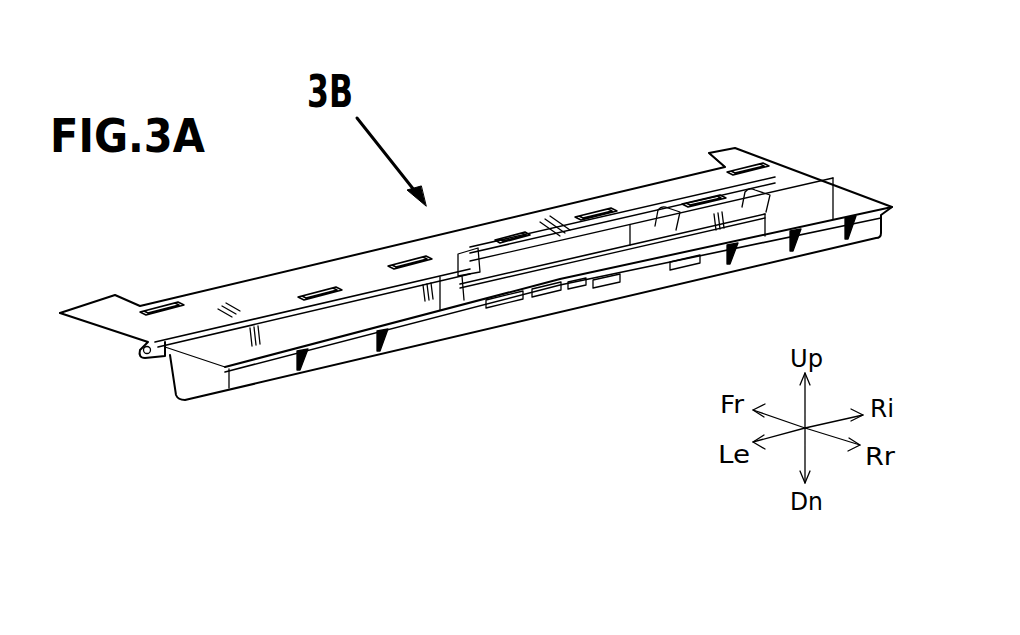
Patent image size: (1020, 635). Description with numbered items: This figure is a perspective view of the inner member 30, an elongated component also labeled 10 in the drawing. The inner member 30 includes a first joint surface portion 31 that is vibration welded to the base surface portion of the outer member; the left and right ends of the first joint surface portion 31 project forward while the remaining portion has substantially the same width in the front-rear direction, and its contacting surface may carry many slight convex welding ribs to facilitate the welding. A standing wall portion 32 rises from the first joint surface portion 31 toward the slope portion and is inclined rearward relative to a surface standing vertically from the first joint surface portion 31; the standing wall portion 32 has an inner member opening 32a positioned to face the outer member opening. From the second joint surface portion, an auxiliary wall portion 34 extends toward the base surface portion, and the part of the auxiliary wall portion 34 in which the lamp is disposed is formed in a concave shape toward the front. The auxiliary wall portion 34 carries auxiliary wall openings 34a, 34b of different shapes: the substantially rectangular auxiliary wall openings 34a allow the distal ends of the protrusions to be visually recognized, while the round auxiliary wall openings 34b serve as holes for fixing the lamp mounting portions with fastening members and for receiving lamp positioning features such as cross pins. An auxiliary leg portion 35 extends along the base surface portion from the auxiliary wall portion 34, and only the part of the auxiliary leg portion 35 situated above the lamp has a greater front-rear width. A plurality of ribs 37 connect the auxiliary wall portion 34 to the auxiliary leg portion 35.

The inner member 30 is at (476, 208).
The vehicle seat component 10 is at (612, 84).
The first joint surface portion 31 is at (644, 203).
The standing wall portion 32 is at (284, 334).
The inner member opening 32a is at (447, 286).
The auxiliary wall portion 34 is at (665, 266).
The auxiliary wall openings 34a is at (623, 277).
The auxiliary wall openings 34b is at (563, 293).
The auxiliary leg portion 35 is at (597, 268).
The ribs 37 is at (310, 360).